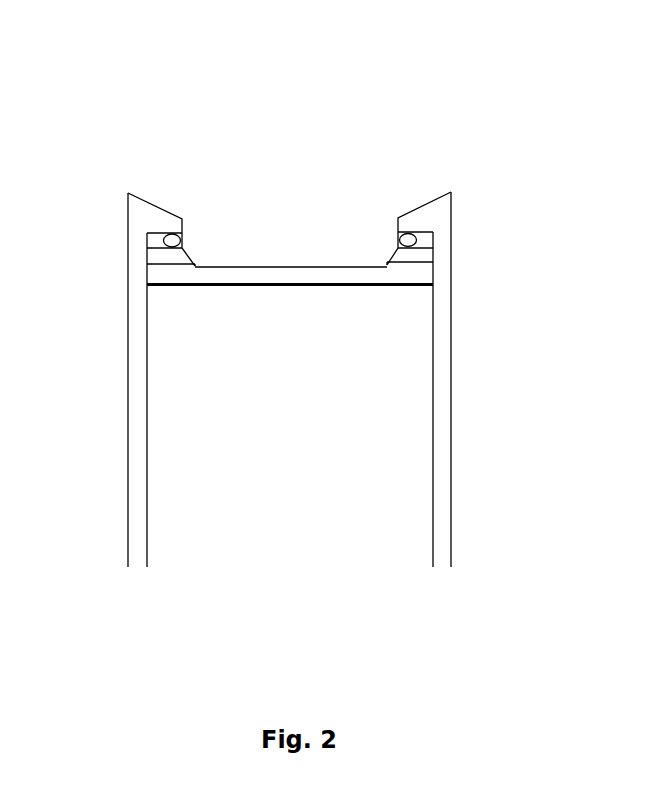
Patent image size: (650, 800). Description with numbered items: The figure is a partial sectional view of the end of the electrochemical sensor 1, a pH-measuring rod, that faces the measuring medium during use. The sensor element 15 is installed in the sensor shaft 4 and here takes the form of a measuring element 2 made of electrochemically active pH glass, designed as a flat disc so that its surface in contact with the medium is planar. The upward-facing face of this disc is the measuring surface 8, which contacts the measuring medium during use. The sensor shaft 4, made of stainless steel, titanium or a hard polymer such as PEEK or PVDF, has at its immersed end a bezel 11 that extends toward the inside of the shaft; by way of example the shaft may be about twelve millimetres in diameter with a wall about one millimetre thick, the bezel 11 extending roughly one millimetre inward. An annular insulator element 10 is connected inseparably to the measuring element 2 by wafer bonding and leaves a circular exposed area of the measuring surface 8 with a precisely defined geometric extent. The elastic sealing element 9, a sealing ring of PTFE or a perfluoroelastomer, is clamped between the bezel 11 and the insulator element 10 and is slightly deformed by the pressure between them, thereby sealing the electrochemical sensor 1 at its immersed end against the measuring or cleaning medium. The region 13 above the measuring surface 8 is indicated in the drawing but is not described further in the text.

The electrochemical sensor 1 is at (495, 133).
The measuring element 2 is at (340, 275).
The sensor shaft 4 is at (440, 410).
The measuring surface 8 is at (292, 267).
The sealing element 9 is at (163, 237).
The insulator element 10 is at (167, 255).
The bezel 11 is at (148, 203).
The cavity 13 is at (225, 242).
The sensor element 15 is at (355, 135).